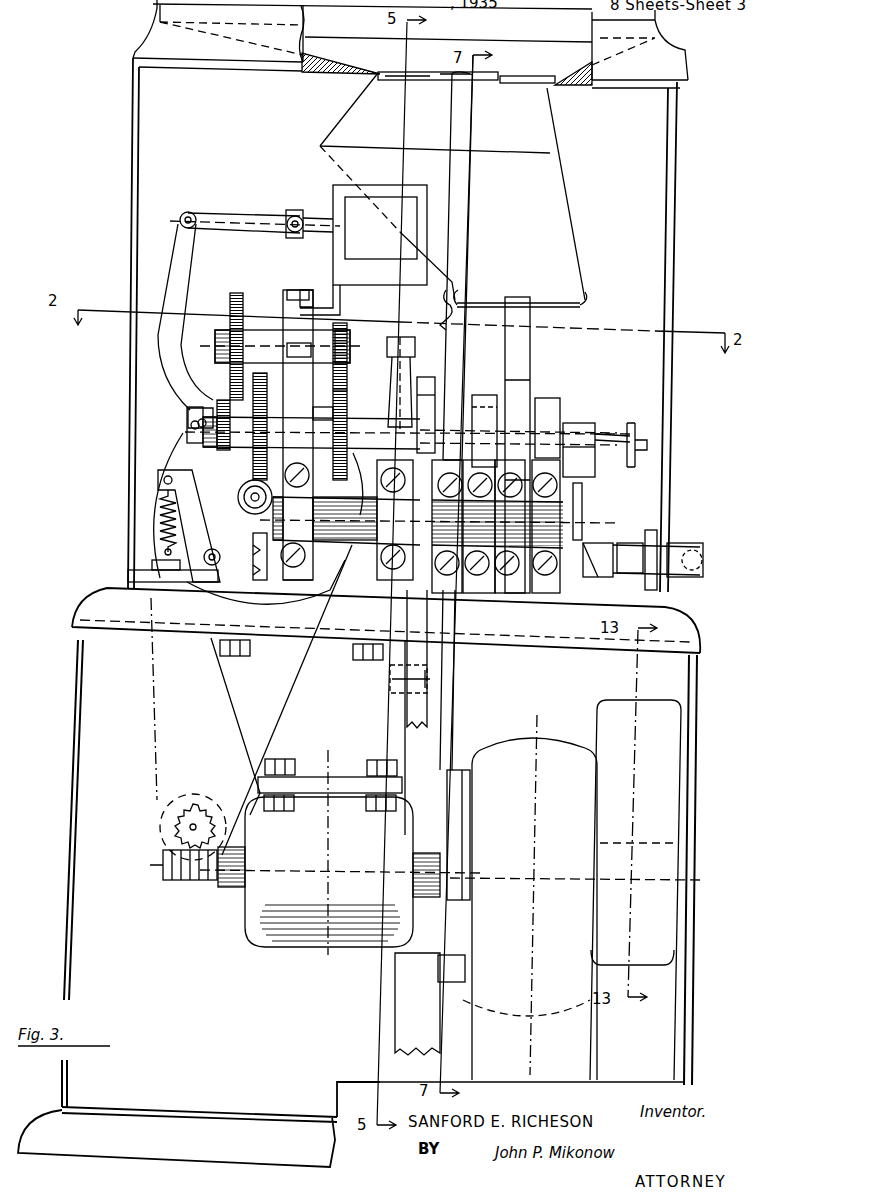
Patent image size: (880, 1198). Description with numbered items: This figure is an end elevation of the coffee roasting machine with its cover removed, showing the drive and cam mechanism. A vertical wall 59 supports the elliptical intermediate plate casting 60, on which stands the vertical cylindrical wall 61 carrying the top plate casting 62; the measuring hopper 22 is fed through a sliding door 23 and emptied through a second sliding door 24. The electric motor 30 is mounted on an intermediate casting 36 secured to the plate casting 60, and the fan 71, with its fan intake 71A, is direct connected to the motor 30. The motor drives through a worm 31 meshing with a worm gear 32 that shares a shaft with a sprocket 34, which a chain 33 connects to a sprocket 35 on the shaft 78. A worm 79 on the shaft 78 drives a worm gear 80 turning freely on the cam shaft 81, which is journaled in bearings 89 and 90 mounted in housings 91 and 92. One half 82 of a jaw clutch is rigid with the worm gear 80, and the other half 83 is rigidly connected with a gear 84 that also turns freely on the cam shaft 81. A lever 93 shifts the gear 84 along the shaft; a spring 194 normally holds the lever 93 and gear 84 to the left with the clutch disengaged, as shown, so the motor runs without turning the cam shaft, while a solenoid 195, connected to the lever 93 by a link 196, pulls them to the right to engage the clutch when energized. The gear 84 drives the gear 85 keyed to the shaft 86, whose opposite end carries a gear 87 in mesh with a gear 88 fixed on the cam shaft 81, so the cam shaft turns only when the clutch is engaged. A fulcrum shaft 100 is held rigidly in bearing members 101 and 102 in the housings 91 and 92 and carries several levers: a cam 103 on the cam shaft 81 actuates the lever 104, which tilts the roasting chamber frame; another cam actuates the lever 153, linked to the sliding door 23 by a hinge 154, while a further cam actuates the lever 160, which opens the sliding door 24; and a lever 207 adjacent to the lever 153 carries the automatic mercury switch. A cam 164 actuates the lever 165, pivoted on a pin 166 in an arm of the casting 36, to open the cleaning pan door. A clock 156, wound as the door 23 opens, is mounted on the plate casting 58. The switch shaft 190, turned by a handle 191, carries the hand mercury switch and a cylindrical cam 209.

The measuring hopper 22 is at (557, 187).
The sliding door 23 is at (512, 83).
The sliding door 24 is at (567, 308).
The electric motor 30 is at (250, 920).
The worm 31 is at (185, 882).
The worm gear 32 is at (165, 835).
The chain 33 is at (155, 750).
The sprocket 34 is at (185, 797).
The sprocket 35 is at (272, 598).
The intermediate casting 36 is at (308, 736).
The plate casting 58 is at (48, 1125).
The vertical wall 59 is at (700, 752).
The intermediate plate casting 60 is at (695, 633).
The vertical cylindrical wall 61 is at (131, 208).
The top plate casting 62 is at (135, 40).
The fan 71 is at (575, 897).
The fan intake 71A is at (635, 890).
The shaft 78 is at (257, 533).
The worm 79 is at (243, 505).
The worm gear 80 is at (240, 495).
The cam shaft 81 is at (375, 428).
The jaw clutch half 82 is at (247, 426).
The jaw clutch half 83 is at (205, 439).
The gear 84 is at (222, 402).
The gear 85 is at (233, 300).
The shaft 86 is at (215, 347).
The gear 87 is at (347, 333).
The gear 88 is at (347, 390).
The bearing 89 is at (320, 417).
The bearing 90 is at (590, 426).
The housing 91 is at (305, 575).
The housing 92 is at (535, 593).
The lever 93 is at (170, 265).
The fulcrum shaft 100 is at (352, 535).
The bearing member 101 is at (320, 515).
The bearing member 102 is at (545, 593).
The cam 103 is at (350, 450).
The lever 104 is at (392, 366).
The lever 153 is at (456, 257).
The hinge 154 is at (440, 80).
The clock 156 is at (430, 1004).
The lever 160 is at (530, 348).
The cam 164 is at (429, 410).
The lever 165 is at (412, 727).
The pin 166 is at (390, 680).
The switch shaft 190 is at (703, 570).
The handle 191 is at (703, 550).
The spring 194 is at (165, 515).
The solenoid 195 is at (363, 250).
The link 196 is at (273, 216).
The lever 207 is at (483, 397).
The cylindrical cam 209 is at (595, 550).